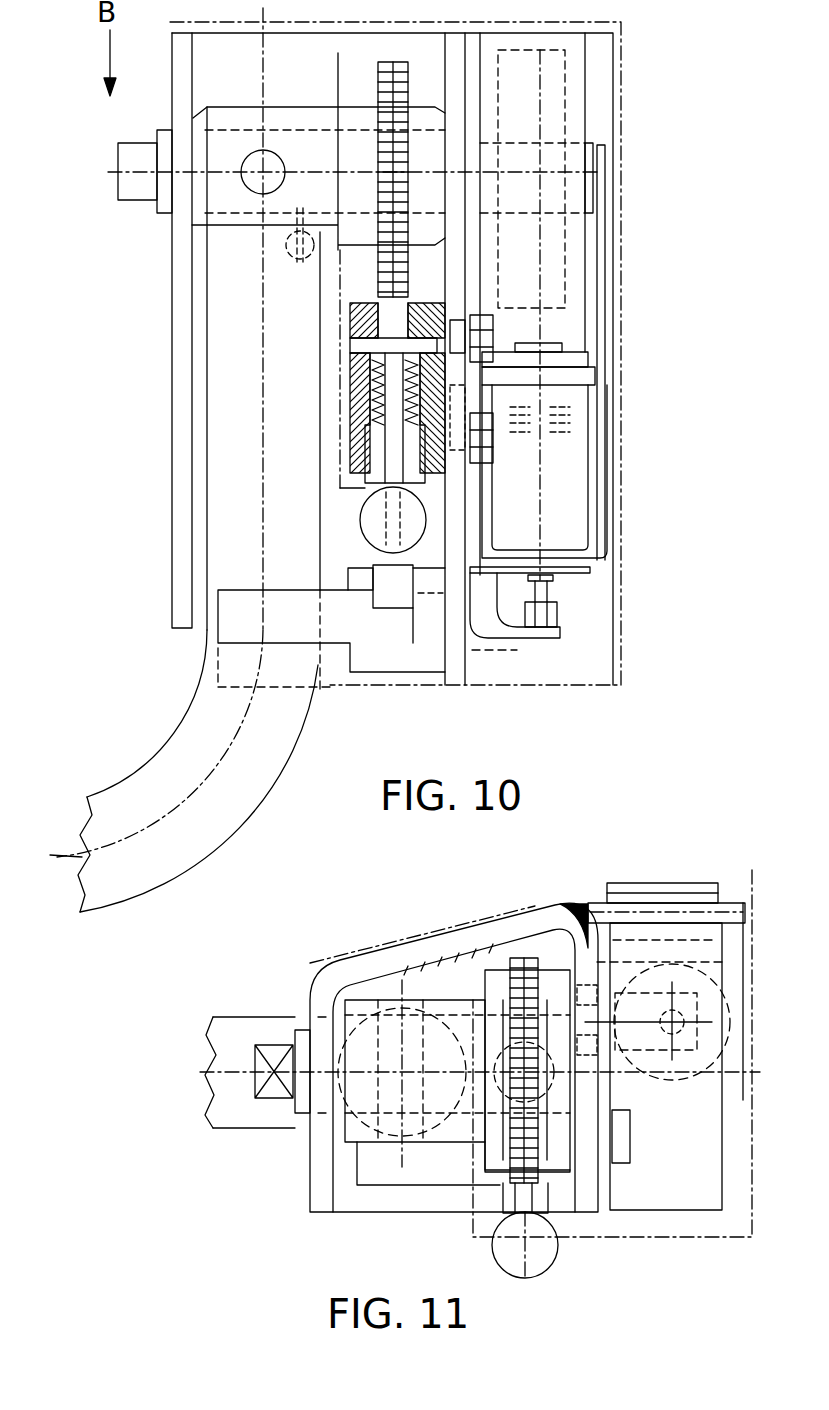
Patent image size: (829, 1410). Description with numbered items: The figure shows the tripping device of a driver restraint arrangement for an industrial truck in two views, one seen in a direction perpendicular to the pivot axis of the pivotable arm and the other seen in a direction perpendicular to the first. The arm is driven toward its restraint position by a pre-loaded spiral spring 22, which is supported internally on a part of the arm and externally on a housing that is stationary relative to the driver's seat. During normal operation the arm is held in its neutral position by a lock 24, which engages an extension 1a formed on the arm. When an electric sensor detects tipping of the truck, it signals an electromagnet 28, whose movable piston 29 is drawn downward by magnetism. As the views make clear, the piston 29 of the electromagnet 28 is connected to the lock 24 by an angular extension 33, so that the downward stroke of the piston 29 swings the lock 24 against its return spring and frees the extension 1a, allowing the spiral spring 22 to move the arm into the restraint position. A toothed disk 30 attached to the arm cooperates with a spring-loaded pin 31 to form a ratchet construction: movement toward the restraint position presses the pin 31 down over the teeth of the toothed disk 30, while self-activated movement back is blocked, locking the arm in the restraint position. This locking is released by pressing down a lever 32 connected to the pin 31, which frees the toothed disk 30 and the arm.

In FIG. 10, the extension 1a is at (237, 622).
In FIG. 10, the spiral spring 22 is at (577, 268).
In FIG. 10, the lock 24 is at (385, 572).
In FIG. 10, the electromagnet 28 is at (573, 465).
In FIG. 11, the electromagnet 28 is at (715, 982).
In FIG. 10, the piston 29 is at (547, 585).
In FIG. 10, the toothed disk 30 is at (378, 86).
In FIG. 11, the toothed disk 30 is at (515, 955).
In FIG. 10, the spring-loaded pin 31 is at (378, 365).
In FIG. 10, the lever 32 is at (362, 518).
In FIG. 11, the lever 32 is at (548, 1255).
In FIG. 10, the angular extension 33 is at (532, 637).